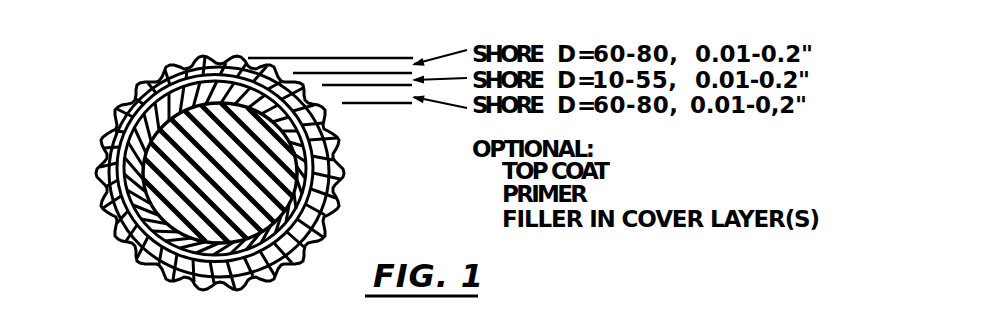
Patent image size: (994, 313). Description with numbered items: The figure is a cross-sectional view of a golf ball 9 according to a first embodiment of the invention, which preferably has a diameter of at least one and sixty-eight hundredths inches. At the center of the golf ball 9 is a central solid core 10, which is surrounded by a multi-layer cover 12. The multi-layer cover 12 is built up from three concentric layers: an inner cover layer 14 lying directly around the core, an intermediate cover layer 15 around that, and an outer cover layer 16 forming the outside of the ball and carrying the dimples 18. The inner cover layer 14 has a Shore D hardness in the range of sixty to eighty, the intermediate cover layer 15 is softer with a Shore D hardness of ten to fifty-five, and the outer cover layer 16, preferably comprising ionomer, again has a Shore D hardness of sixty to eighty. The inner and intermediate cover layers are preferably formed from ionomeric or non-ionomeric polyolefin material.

The golf ball 9 is at (295, 44).
The central solid core 10 is at (257, 178).
The multi-layer cover 12 is at (98, 183).
The inner cover layer 14 is at (158, 86).
The intermediate cover layer 15 is at (183, 103).
The outer cover layer 16 is at (100, 154).
The dimples 18 is at (110, 226).